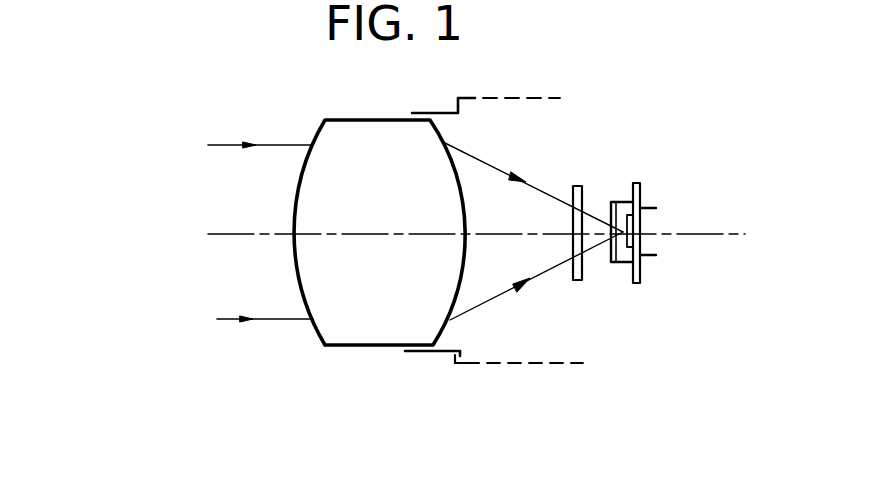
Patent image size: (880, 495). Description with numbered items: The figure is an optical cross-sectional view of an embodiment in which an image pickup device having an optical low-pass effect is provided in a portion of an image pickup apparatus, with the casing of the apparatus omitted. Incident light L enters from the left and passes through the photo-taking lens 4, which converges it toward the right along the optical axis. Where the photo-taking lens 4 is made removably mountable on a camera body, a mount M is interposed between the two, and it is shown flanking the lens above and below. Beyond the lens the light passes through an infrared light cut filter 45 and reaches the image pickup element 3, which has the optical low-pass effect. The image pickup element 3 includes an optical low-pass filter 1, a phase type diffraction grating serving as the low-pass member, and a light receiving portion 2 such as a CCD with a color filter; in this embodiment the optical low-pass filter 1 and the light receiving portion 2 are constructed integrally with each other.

The optical low-pass filter 1 is at (613, 262).
The light receiving portion 2 is at (632, 248).
The image pickup element 3 is at (637, 183).
The photo-taking lens 4 is at (377, 124).
The infrared light cut filter 45 is at (577, 186).
The incident light L is at (277, 321).
The mount M is at (465, 357).